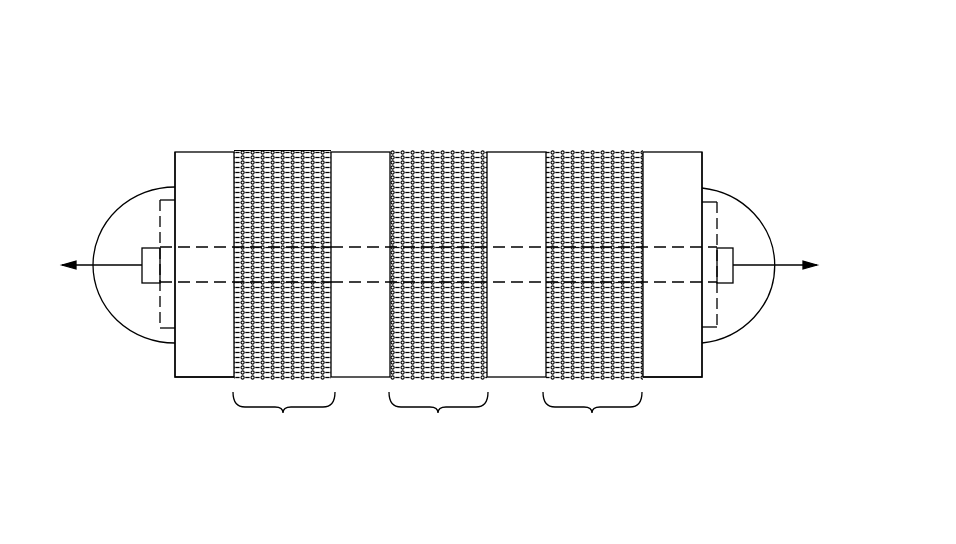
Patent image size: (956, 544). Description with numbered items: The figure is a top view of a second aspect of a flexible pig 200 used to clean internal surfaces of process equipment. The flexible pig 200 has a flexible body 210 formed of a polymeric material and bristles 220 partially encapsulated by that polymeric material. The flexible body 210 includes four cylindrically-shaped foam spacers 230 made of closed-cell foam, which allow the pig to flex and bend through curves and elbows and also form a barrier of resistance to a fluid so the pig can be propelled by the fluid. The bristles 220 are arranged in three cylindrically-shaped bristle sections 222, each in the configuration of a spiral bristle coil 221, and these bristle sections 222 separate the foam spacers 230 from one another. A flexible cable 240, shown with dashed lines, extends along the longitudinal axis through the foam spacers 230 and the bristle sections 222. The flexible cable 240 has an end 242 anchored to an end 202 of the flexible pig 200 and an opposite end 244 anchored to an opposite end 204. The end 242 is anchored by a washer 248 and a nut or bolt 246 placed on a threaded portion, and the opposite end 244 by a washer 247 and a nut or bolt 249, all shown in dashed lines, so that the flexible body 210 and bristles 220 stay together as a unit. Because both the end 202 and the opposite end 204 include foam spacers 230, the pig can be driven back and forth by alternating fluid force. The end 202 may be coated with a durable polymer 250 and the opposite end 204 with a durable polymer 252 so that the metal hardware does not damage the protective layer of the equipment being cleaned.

The flexible pig 200 is at (177, 48).
The end 202 is at (185, 377).
The opposite end 204 is at (683, 377).
The flexible body 210 is at (700, 98).
The bristles 220 is at (306, 152).
The spiral bristle coil 221 is at (263, 145).
The bristle sections 222 is at (437, 415).
The foam spacers 230 is at (221, 352).
The flexible cable 240 is at (364, 247).
The end 242 is at (185, 247).
The opposite end 244 is at (693, 247).
The nut or bolt 246 is at (142, 275).
The washer 247 is at (730, 248).
The washer 248 is at (160, 222).
The nut or bolt 249 is at (718, 308).
The durable polymer 250 is at (145, 190).
The durable polymer 252 is at (723, 190).